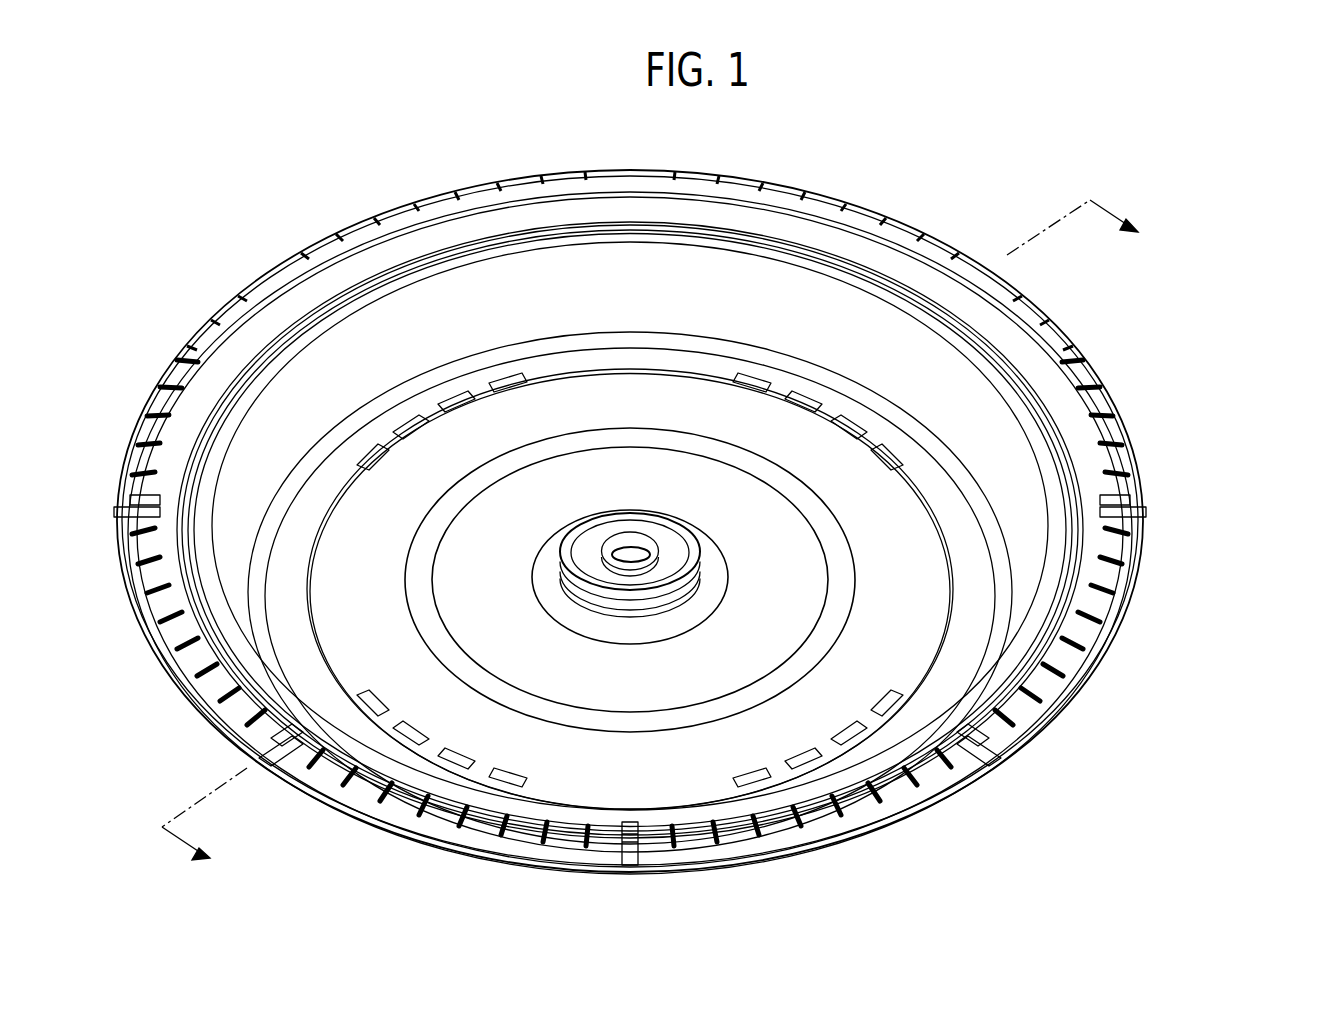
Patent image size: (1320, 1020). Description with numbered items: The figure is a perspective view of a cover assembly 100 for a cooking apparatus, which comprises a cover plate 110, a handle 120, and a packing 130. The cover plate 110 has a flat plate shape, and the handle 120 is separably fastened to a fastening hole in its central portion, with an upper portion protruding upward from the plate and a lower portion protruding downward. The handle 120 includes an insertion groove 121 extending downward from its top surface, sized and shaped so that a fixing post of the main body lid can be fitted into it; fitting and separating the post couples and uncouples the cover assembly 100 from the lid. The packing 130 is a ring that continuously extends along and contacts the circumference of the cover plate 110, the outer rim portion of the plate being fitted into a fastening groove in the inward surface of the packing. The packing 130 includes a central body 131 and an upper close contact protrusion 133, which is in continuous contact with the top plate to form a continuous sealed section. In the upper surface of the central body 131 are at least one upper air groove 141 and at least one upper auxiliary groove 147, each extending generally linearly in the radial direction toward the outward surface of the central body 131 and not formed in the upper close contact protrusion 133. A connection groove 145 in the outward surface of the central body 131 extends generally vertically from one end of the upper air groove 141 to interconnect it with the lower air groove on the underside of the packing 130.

The cover assembly 100 is at (1072, 127).
The cover plate 110 is at (525, 405).
The handle 120 is at (665, 538).
The insertion groove 121 is at (632, 548).
The packing 130 is at (1145, 484).
The central body 131 is at (942, 790).
The upper close contact protrusion 133 is at (1085, 445).
The upper air groove 141 is at (1013, 728).
The connection groove 145 is at (993, 765).
The upper auxiliary groove 147 is at (835, 800).